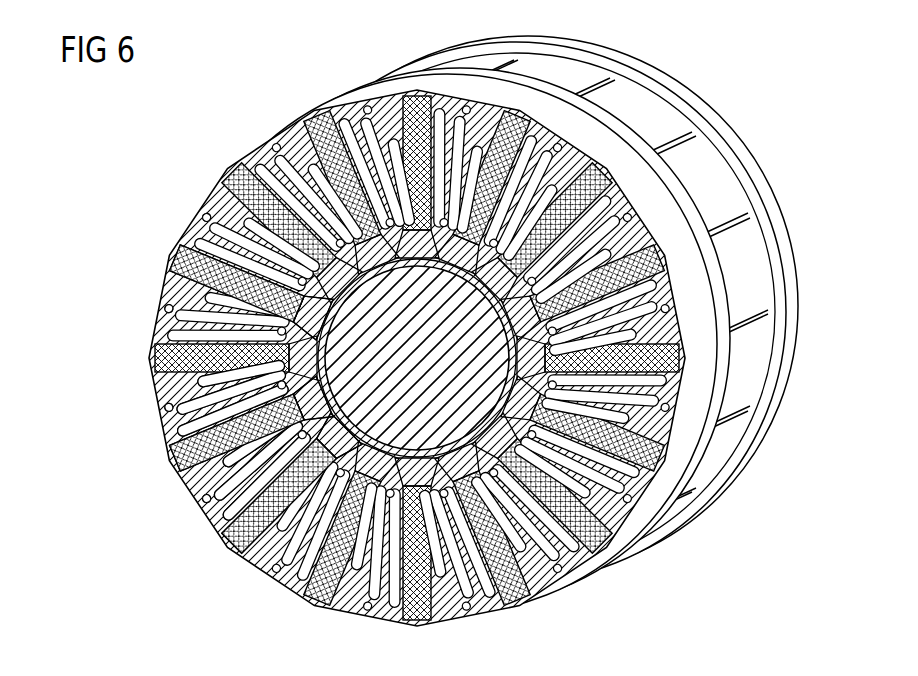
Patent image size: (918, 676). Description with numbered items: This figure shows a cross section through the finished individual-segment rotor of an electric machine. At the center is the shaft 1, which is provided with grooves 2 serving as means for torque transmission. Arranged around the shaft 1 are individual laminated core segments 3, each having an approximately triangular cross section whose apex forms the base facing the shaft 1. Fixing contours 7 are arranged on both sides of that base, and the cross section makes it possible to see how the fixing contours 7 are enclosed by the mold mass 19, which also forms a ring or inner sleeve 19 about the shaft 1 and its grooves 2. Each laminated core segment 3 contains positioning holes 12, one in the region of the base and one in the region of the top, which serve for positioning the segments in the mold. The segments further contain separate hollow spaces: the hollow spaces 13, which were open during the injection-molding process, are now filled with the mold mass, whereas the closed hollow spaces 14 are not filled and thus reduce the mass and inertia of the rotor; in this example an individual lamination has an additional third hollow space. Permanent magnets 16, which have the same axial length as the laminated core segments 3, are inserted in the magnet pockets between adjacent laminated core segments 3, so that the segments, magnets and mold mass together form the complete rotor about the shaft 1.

The shaft 1 is at (330, 354).
The grooves 2 is at (262, 560).
The laminated core segment 3 is at (742, 180).
The fixing contours 7 is at (178, 264).
The positioning holes 12 is at (203, 214).
The hollow space 13 is at (167, 312).
The second hollow space 14 is at (178, 391).
The permanent magnets 16 is at (172, 465).
The mold mass 19 is at (225, 537).